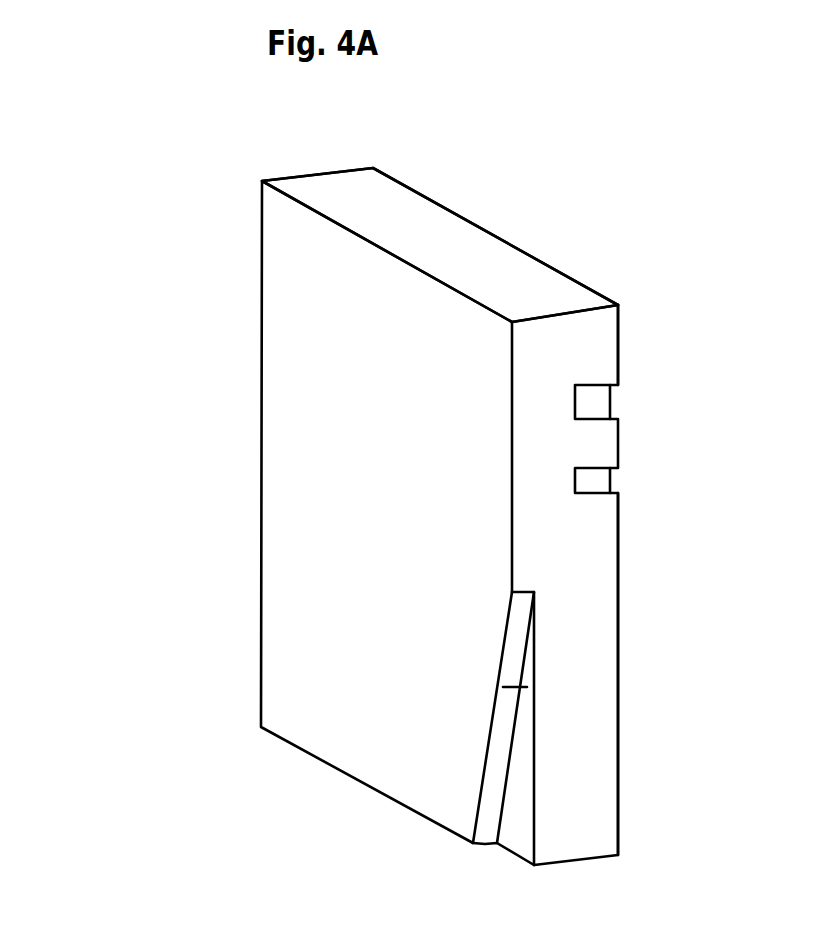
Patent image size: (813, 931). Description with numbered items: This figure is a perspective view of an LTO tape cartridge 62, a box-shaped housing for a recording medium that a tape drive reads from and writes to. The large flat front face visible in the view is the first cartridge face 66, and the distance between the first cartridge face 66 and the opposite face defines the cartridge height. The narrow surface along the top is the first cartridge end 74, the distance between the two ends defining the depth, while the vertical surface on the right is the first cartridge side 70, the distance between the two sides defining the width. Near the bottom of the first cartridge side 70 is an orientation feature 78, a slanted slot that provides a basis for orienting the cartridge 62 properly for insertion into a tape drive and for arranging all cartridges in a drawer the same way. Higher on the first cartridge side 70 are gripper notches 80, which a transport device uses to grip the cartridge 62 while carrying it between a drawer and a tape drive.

The LTO tape cartridge 62 is at (257, 372).
The first cartridge face 66 is at (352, 753).
The first cartridge end 74 is at (477, 250).
The first cartridge side 70 is at (592, 628).
The orientation feature 78 is at (507, 723).
The gripper notches 80 is at (805, 306).